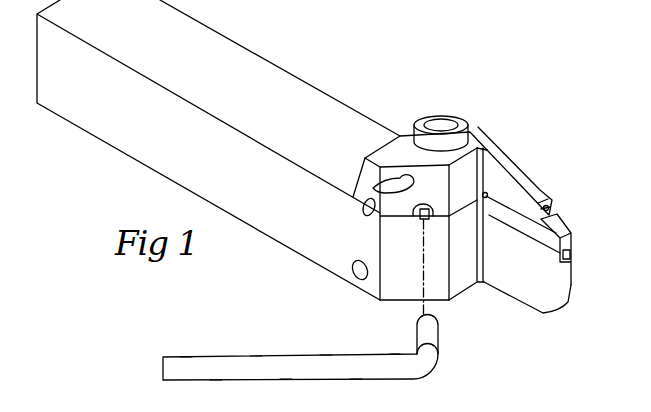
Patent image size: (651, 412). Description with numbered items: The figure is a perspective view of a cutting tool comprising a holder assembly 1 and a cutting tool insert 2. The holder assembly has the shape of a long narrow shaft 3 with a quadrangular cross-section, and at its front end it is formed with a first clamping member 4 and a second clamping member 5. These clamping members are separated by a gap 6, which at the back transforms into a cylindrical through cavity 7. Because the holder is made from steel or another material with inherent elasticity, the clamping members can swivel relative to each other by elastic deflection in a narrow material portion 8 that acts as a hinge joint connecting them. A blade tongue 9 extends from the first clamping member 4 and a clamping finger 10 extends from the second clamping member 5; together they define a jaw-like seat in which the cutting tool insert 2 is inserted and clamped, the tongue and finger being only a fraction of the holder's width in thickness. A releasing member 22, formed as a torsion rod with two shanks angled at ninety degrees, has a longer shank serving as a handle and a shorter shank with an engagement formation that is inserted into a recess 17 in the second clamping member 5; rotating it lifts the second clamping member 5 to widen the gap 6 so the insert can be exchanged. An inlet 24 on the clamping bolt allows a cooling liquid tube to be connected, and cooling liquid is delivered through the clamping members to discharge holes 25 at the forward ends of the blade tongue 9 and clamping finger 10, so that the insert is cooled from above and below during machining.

The holder assembly 1 is at (481, 79).
The cutting tool insert 2 is at (568, 228).
The long narrow shaft 3 is at (252, 70).
The first clamping member 4 is at (466, 286).
The second clamping member 5 is at (481, 141).
The gap 6 is at (458, 214).
The cylindrical through cavity 7 is at (364, 211).
The narrow material portion 8 is at (355, 197).
The blade tongue 9 is at (529, 286).
The clamping finger 10 is at (510, 188).
The recess 17 is at (423, 218).
The releasing member 22 is at (423, 332).
The inlet 24 is at (443, 122).
The discharge holes 25 is at (548, 210).